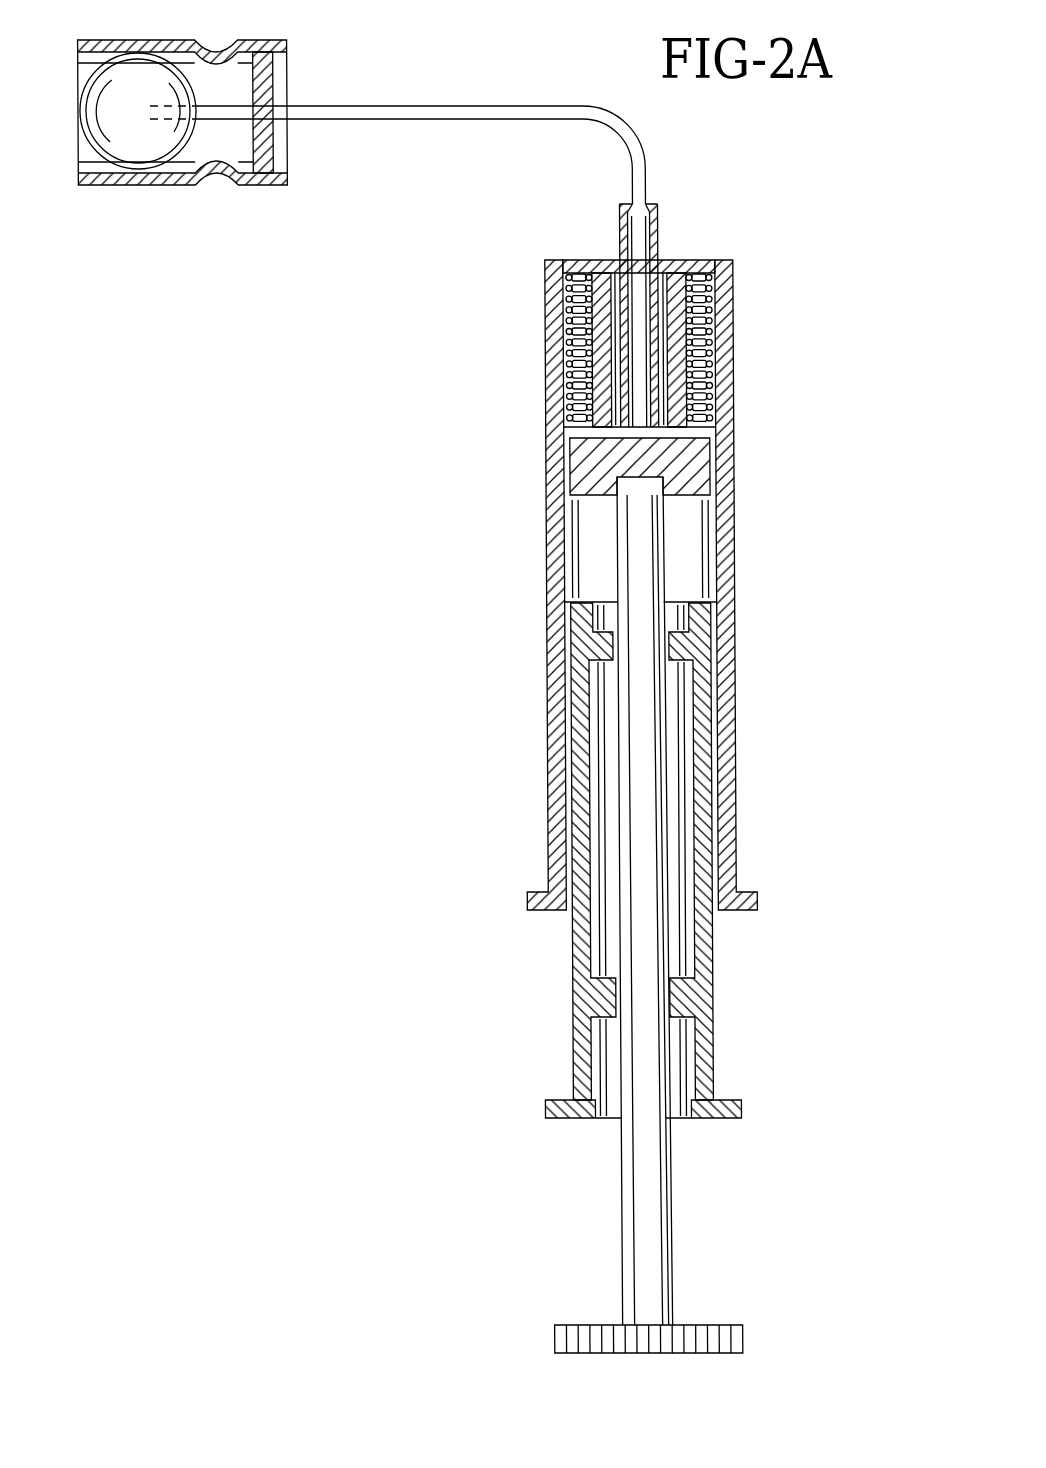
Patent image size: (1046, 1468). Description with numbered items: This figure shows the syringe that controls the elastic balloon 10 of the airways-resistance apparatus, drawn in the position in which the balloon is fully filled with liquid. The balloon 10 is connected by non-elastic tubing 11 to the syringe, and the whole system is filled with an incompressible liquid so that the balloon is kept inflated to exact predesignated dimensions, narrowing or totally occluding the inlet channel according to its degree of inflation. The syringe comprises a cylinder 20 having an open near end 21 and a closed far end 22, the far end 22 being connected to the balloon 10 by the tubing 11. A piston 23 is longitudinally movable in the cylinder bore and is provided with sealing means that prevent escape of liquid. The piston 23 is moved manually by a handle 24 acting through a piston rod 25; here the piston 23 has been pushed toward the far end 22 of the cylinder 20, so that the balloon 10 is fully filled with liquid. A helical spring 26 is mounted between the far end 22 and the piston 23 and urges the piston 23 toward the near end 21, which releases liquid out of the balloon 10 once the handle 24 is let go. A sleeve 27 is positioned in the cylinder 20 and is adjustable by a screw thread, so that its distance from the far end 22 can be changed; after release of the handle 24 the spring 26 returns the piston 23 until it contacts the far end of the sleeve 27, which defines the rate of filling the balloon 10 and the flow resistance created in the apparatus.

The elastic balloon 10 is at (138, 148).
The non-elastic tubing 11 is at (382, 120).
The cylinder 20 is at (548, 558).
The open near end 21 is at (600, 1120).
The closed far end 22 is at (581, 261).
The piston 23 is at (582, 470).
The handle 24 is at (580, 1325).
The piston rod 25 is at (626, 803).
The helical spring 26 is at (570, 303).
The sleeve 27 is at (572, 722).